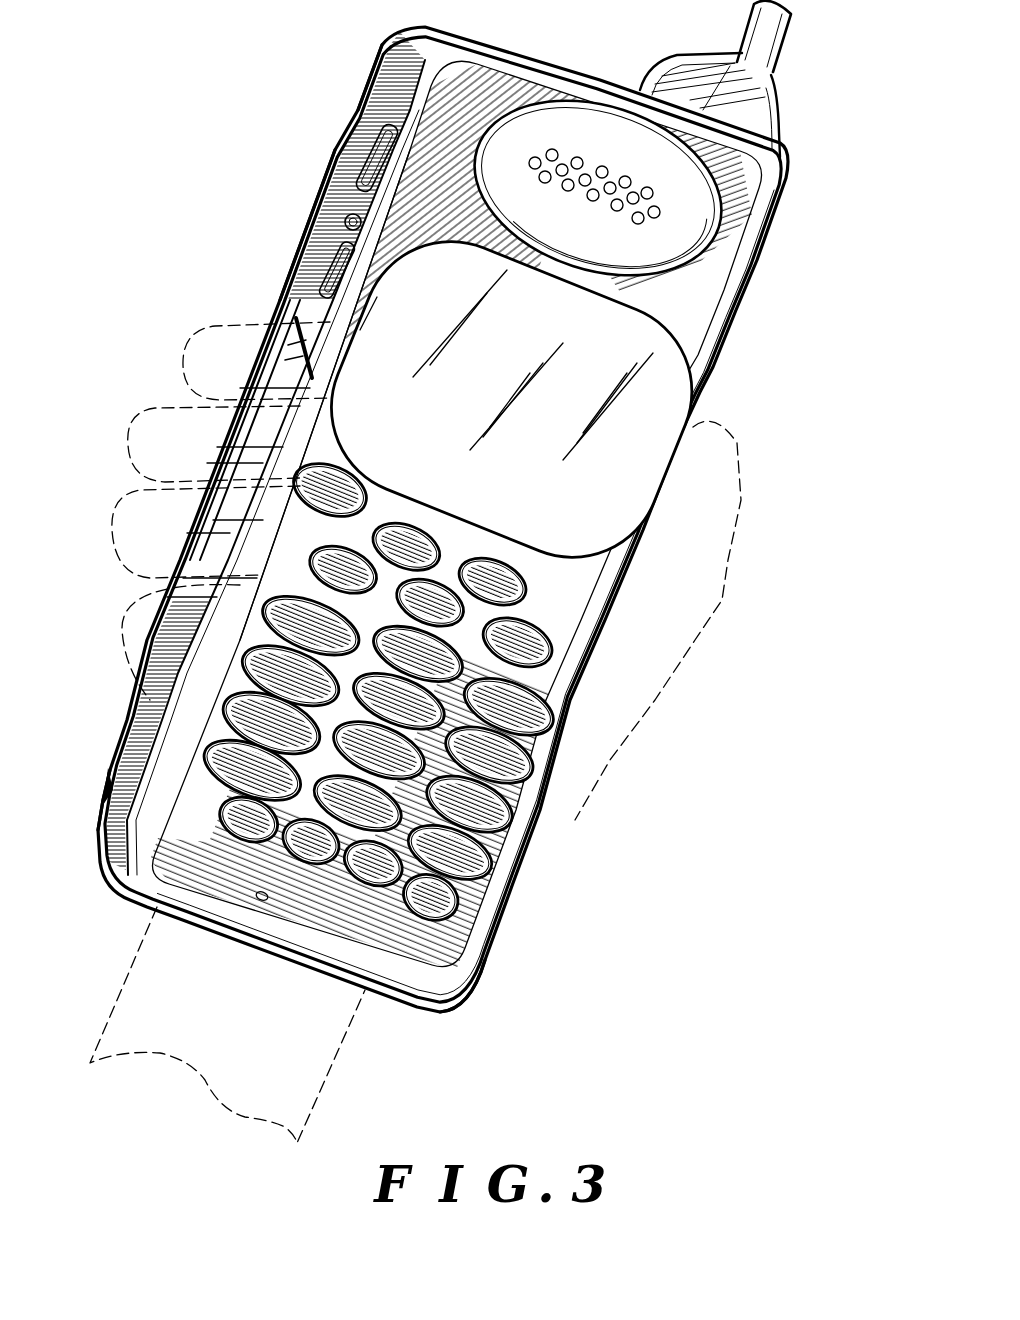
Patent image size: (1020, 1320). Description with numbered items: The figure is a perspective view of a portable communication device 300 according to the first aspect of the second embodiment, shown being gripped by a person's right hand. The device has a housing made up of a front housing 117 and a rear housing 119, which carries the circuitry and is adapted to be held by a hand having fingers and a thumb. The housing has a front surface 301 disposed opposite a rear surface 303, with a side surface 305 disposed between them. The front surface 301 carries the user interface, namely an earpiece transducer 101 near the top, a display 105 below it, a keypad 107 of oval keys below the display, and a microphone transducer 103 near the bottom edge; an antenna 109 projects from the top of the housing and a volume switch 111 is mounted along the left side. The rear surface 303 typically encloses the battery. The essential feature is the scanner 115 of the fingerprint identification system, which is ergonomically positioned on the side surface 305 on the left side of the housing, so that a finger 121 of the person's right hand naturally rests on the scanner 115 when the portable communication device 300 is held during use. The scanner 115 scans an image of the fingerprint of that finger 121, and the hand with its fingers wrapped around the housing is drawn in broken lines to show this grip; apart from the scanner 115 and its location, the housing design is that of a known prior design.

The earpiece transducer 101 is at (690, 207).
The microphone transducer 103 is at (256, 900).
The display 105 is at (653, 390).
The keypad 107 is at (520, 717).
The antenna 109 is at (767, 37).
The volume switch 111 is at (340, 260).
The scanner 115 is at (295, 335).
The front housing 117 is at (443, 1000).
The rear housing 119 is at (107, 865).
The finger 121 is at (210, 360).
The portable communication device 300 is at (688, 995).
The front surface 301 is at (558, 558).
The rear surface 303 is at (325, 137).
The side surface 305 is at (392, 93).